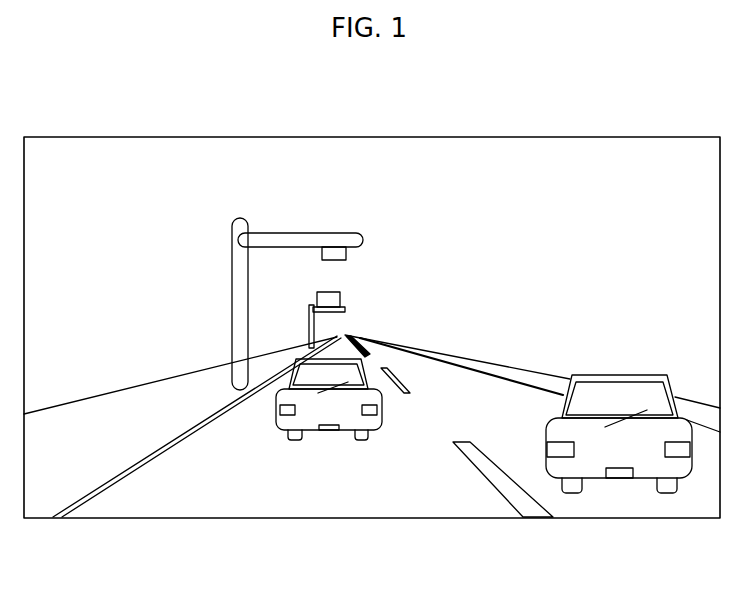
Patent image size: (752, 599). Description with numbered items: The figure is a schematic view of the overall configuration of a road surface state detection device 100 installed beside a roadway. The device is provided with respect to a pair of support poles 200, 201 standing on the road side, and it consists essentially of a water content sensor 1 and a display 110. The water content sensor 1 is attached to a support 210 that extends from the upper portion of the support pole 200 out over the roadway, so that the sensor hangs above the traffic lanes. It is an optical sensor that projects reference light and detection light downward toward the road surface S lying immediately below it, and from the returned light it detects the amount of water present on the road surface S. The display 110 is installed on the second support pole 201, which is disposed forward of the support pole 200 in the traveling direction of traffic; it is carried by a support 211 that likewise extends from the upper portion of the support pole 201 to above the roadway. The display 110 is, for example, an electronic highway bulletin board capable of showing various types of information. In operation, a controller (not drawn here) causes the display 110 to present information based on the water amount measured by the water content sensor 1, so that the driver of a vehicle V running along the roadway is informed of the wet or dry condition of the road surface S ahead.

The water content sensor 1 is at (338, 255).
The road surface state detection device 100 is at (405, 273).
The display 110 is at (340, 297).
The support pole 200 is at (242, 293).
The support 210 is at (250, 238).
The support 211 is at (344, 311).
The support pole 201 is at (315, 328).
The vehicle V is at (375, 411).
The road surface S is at (297, 467).